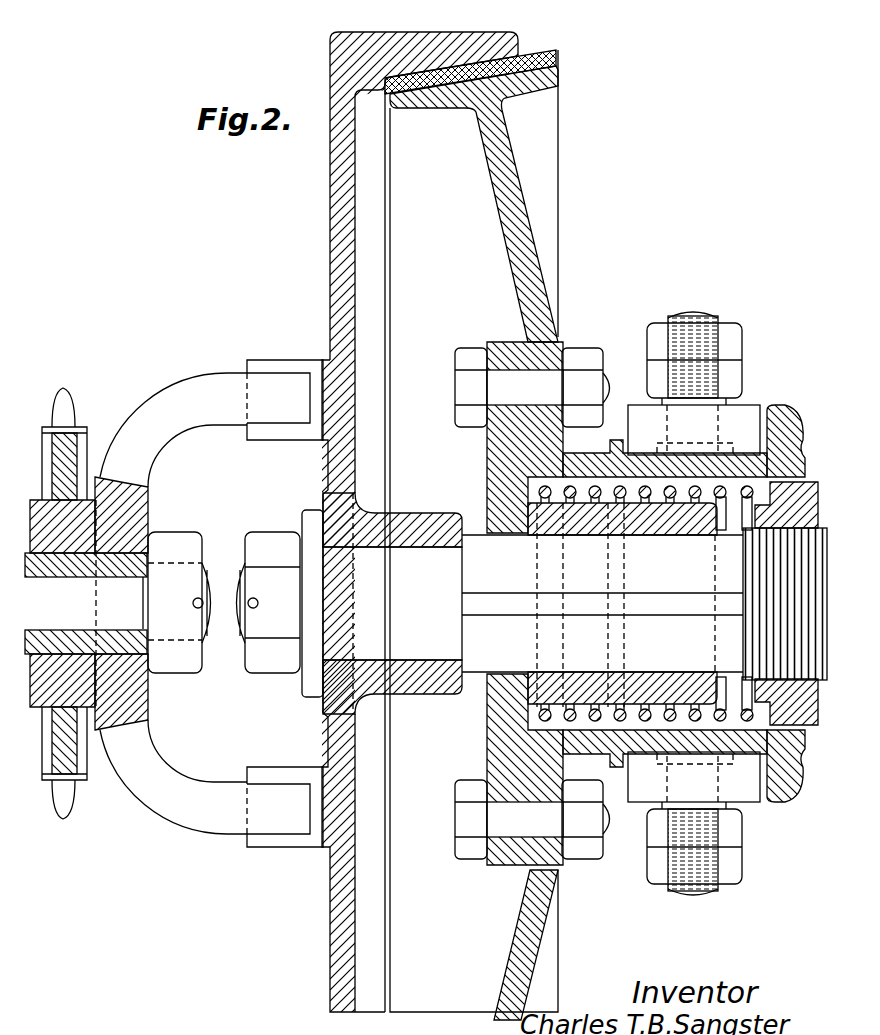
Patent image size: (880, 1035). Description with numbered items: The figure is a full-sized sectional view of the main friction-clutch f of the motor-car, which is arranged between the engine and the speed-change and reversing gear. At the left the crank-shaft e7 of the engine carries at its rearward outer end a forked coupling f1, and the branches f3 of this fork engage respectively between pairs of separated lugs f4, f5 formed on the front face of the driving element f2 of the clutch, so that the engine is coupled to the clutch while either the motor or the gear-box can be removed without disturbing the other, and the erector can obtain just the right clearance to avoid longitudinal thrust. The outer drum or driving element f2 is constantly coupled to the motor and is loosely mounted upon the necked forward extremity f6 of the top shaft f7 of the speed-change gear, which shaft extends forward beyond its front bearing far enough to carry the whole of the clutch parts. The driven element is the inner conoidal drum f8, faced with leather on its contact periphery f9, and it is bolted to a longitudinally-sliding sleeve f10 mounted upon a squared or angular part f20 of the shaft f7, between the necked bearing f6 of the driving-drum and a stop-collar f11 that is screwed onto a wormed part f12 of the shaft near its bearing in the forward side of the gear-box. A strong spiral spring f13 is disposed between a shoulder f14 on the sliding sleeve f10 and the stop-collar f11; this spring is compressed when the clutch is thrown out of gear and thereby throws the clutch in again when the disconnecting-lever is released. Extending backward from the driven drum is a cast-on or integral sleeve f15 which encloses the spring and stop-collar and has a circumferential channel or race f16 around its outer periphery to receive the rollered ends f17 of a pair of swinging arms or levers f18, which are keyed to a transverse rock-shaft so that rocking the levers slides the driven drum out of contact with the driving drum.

The crank-shaft e7 is at (162, 603).
The friction-clutch f is at (622, 274).
The forked coupling f1 is at (153, 455).
The driving element f2 is at (322, 262).
The branches of the fork f3 is at (285, 603).
The lug f4 is at (276, 430).
The lug f5 is at (278, 767).
The necked forward extremity f6 is at (382, 603).
The top shaft f7 is at (822, 680).
The inner conoidal drum f8 is at (500, 543).
The contact periphery f9 is at (540, 50).
The longitudinally-sliding sleeve f10 is at (657, 520).
The stop-collar f11 is at (786, 505).
The wormed part f12 is at (785, 604).
The spiral spring f13 is at (538, 485).
The shoulder f14 is at (538, 493).
The integral sleeve f15 is at (590, 458).
The channel or race f16 is at (765, 448).
The rollered ends f17 is at (748, 412).
The swinging arms or levers f18 is at (733, 368).
The squared or angular part f20 is at (602, 605).